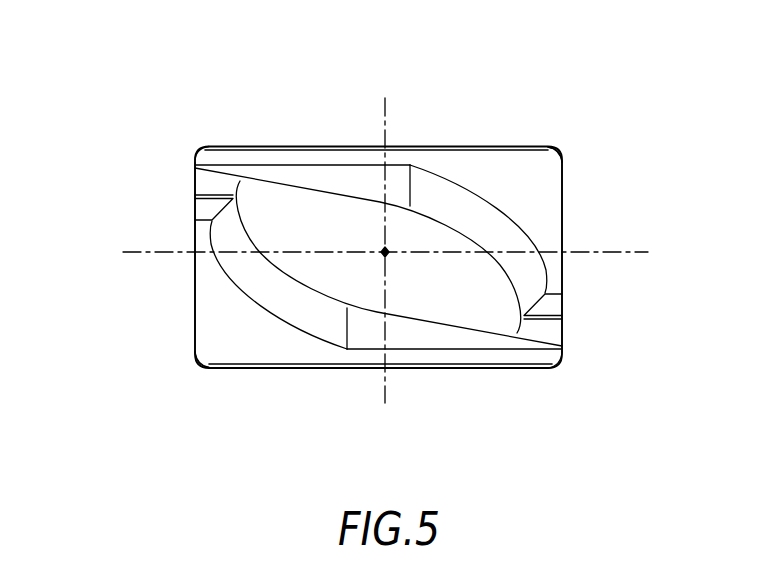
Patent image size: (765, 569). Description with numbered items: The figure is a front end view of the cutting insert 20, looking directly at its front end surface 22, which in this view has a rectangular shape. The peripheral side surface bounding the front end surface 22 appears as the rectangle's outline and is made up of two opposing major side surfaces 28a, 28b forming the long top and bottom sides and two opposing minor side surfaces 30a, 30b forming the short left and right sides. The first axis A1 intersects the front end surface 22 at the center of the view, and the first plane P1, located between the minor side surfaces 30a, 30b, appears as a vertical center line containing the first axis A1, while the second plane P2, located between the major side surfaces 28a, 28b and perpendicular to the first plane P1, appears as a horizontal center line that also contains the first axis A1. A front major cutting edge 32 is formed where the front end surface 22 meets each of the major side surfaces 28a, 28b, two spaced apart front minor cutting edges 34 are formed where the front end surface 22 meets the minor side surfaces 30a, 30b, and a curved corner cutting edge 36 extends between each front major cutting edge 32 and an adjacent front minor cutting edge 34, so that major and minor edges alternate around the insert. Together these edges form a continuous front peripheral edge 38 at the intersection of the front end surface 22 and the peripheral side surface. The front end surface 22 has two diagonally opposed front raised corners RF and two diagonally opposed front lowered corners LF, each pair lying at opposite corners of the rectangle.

The cutting insert 20 is at (530, 114).
The front end surface 22 is at (480, 311).
The major side surface 28a is at (453, 133).
The major side surface 28b is at (448, 383).
The minor side surface 30a is at (180, 173).
The minor side surface 30b is at (580, 300).
The front major cutting edge 32 is at (493, 145).
The front minor cutting edge 34 is at (562, 188).
The curved corner cutting edge 36 is at (562, 162).
The front peripheral edge 38 is at (303, 383).
The first plane P1 is at (388, 250).
The second plane P2 is at (386, 254).
The first axis A1 is at (387, 255).
The front lowered corner LF is at (200, 150).
The front raised corner RF is at (553, 146).